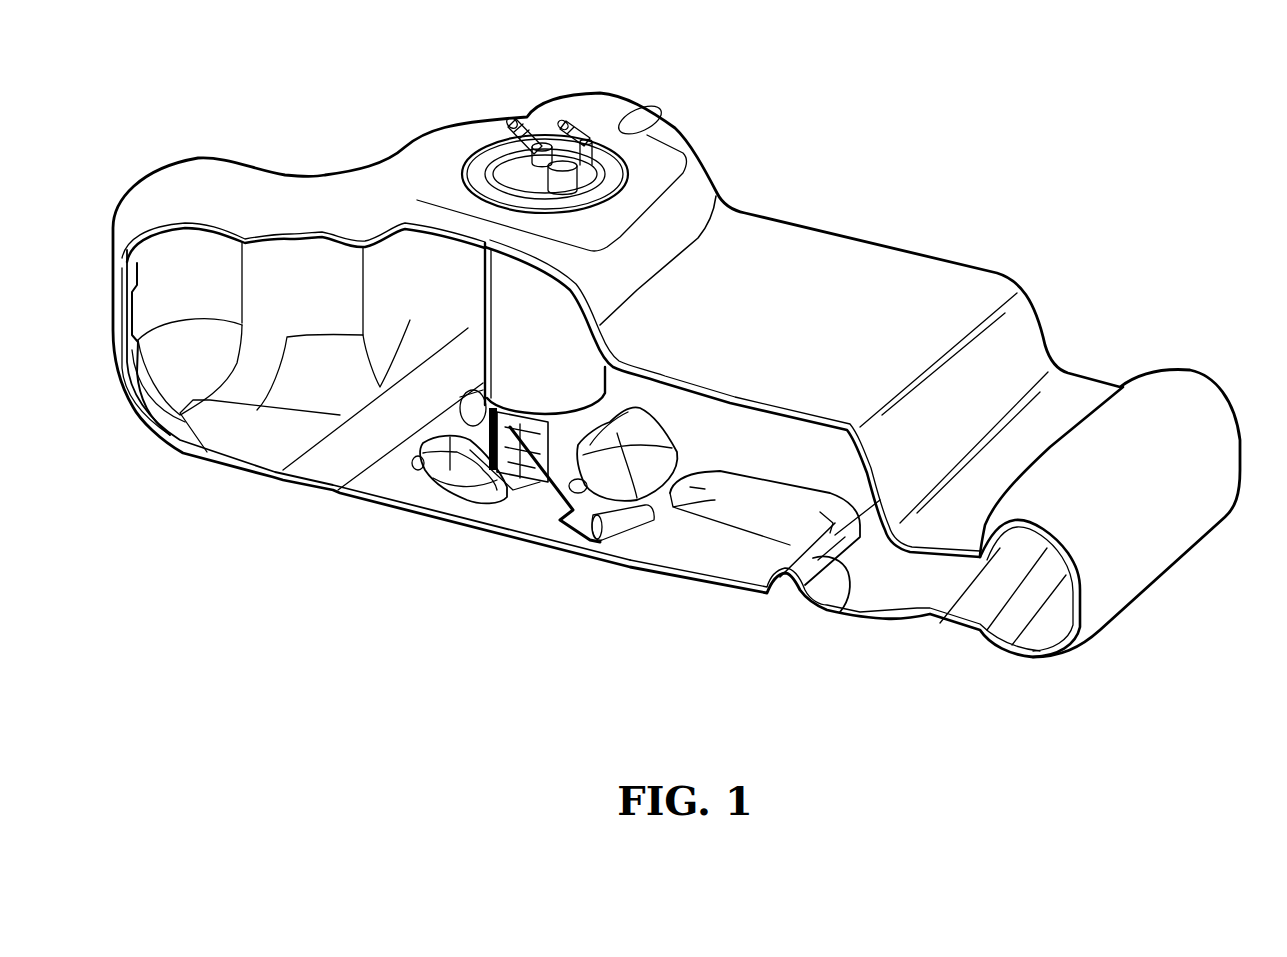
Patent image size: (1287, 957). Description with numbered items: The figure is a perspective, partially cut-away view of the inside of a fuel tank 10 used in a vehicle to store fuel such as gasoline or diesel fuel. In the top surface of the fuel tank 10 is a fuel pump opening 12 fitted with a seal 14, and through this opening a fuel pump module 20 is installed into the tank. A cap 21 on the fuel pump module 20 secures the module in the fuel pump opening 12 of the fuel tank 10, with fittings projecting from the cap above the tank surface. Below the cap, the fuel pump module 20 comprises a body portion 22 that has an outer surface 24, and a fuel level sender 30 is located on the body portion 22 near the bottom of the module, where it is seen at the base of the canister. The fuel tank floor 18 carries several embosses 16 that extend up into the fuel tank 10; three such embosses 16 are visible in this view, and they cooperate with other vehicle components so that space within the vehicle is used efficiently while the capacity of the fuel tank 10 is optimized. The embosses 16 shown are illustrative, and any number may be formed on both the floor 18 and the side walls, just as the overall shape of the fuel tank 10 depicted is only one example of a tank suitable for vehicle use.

The fuel tank 10 is at (895, 155).
The fuel pump opening 12 is at (622, 132).
The seal 14 is at (478, 168).
The embosses 16 is at (650, 447).
The fuel tank floor 18 is at (710, 557).
The fuel pump module 20 is at (470, 313).
The cap 21 is at (560, 157).
The body portion 22 is at (517, 368).
The outer surface 24 is at (533, 351).
The fuel level sender 30 is at (533, 490).